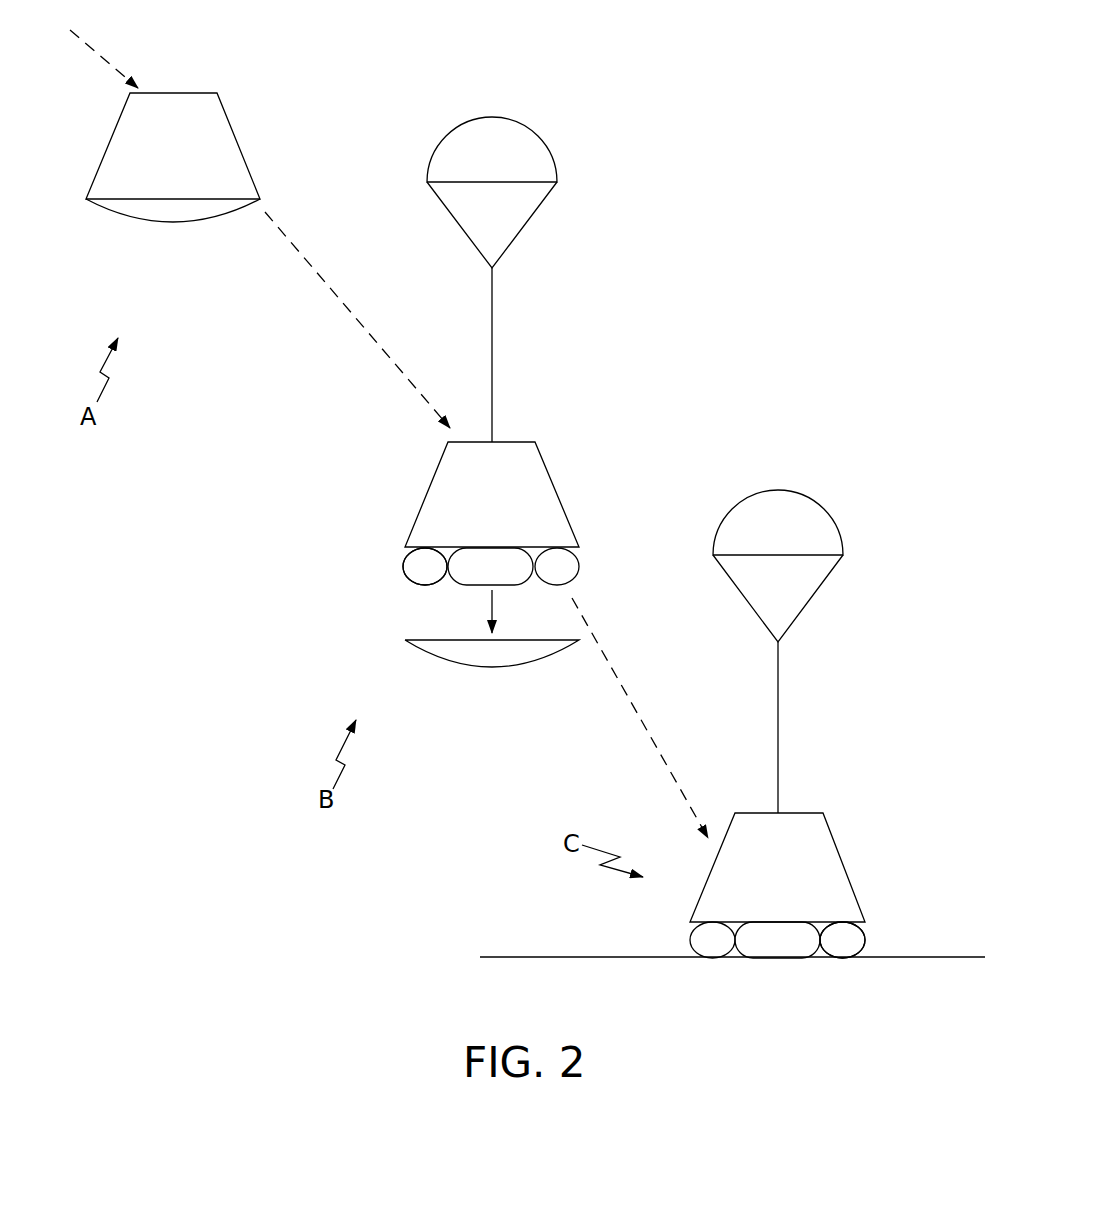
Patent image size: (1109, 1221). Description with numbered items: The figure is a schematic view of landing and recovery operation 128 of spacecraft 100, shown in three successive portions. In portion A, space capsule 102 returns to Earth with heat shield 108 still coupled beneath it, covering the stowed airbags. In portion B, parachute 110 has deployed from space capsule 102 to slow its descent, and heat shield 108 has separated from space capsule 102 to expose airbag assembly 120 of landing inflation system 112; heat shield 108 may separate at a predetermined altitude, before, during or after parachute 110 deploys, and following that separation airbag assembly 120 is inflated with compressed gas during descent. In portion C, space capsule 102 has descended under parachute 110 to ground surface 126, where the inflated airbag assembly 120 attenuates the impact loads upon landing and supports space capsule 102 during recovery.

The spacecraft 100 is at (266, 88).
The space capsule 102 is at (242, 153).
The heat shield 108 is at (175, 223).
The parachute 110 is at (493, 117).
The landing inflation system 112 is at (363, 571).
The airbag assembly 120 is at (412, 587).
The ground surface 126 is at (612, 960).
The landing and recovery operation 128 is at (794, 136).